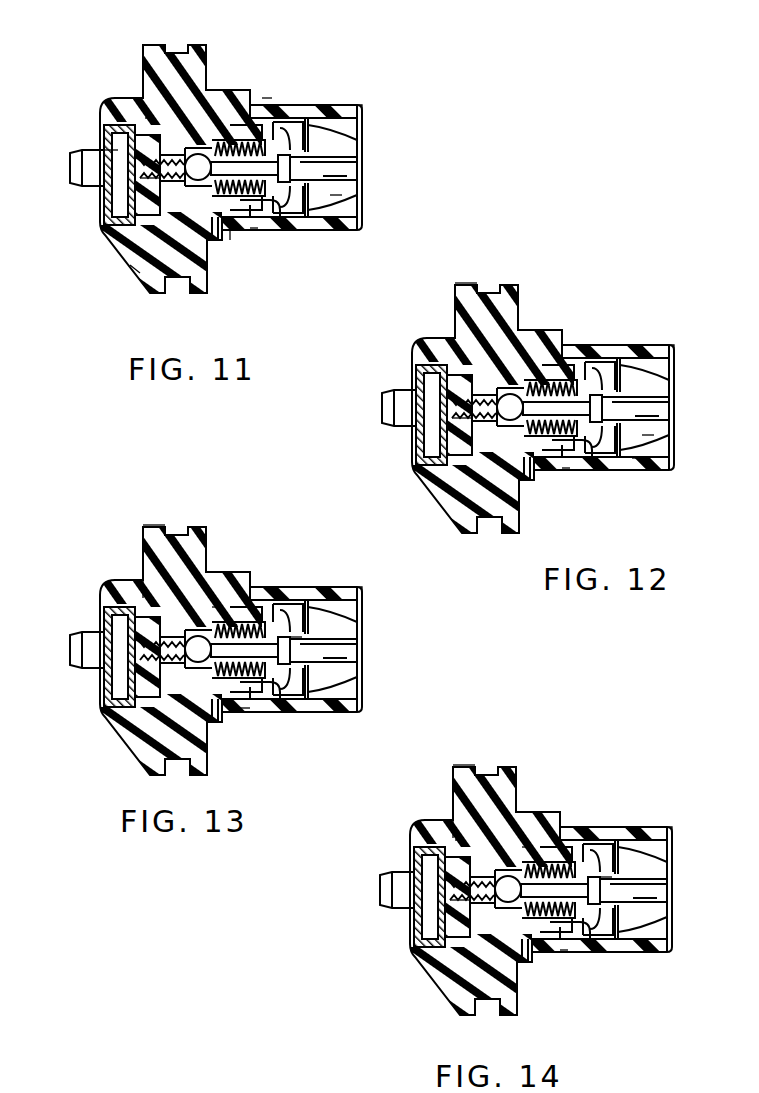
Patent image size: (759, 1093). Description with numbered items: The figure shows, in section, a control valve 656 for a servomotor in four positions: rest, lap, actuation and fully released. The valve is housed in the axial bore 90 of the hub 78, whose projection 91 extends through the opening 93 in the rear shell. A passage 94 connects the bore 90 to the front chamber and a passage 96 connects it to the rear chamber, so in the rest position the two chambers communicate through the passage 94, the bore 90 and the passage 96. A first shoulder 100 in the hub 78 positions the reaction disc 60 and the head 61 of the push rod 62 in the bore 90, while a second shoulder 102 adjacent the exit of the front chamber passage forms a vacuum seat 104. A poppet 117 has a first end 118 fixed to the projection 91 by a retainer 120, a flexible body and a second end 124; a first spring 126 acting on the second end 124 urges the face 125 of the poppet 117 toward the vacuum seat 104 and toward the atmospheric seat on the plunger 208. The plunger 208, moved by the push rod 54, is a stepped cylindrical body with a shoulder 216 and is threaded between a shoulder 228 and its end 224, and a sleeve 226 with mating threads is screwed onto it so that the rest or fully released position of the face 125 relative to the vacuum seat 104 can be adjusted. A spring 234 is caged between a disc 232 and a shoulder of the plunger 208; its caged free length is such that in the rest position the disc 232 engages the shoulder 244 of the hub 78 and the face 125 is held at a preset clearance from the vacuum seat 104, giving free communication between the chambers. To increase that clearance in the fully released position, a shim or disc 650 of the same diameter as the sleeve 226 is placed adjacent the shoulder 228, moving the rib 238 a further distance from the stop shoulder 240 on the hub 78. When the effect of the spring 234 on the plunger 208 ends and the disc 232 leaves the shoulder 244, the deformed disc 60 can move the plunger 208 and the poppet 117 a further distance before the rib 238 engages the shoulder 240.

In FIG. 11, the push rod 54 is at (348, 171).
In FIG. 12, the push rod 54 is at (657, 399).
In FIG. 13, the push rod 54 is at (350, 657).
In FIG. 14, the push rod 54 is at (655, 895).
In FIG. 11, the reaction disc 60 is at (118, 150).
In FIG. 12, the reaction disc 60 is at (427, 387).
In FIG. 13, the reaction disc 60 is at (117, 665).
In FIG. 14, the reaction disc 60 is at (430, 906).
In FIG. 11, the head 61 is at (107, 130).
In FIG. 12, the head 61 is at (412, 446).
In FIG. 13, the head 61 is at (103, 622).
In FIG. 14, the head 61 is at (420, 858).
In FIG. 11, the push rod 62 is at (84, 165).
In FIG. 12, the push rod 62 is at (393, 404).
In FIG. 13, the push rod 62 is at (78, 650).
In FIG. 14, the push rod 62 is at (386, 896).
In FIG. 11, the hub 78 is at (150, 297).
In FIG. 12, the hub 78 is at (458, 296).
In FIG. 13, the hub 78 is at (150, 530).
In FIG. 14, the hub 78 is at (462, 768).
In FIG. 11, the axial bore 90 is at (360, 133).
In FIG. 12, the axial bore 90 is at (675, 368).
In FIG. 13, the axial bore 90 is at (360, 617).
In FIG. 14, the axial bore 90 is at (668, 850).
In FIG. 11, the projection 91 is at (328, 112).
In FIG. 12, the projection 91 is at (667, 465).
In FIG. 13, the projection 91 is at (324, 594).
In FIG. 14, the projection 91 is at (633, 836).
In FIG. 11, the opening 93 is at (354, 110).
In FIG. 12, the opening 93 is at (630, 353).
In FIG. 13, the opening 93 is at (352, 594).
In FIG. 14, the opening 93 is at (652, 835).
In FIG. 11, the passage 94 is at (153, 80).
In FIG. 12, the passage 94 is at (465, 323).
In FIG. 13, the passage 94 is at (153, 562).
In FIG. 14, the passage 94 is at (465, 797).
In FIG. 11, the passage 96 is at (220, 238).
In FIG. 12, the passage 96 is at (530, 478).
In FIG. 13, the passage 96 is at (218, 720).
In FIG. 14, the passage 96 is at (524, 955).
In FIG. 11, the first shoulder 100 is at (120, 100).
In FIG. 11, the second shoulder 102 is at (236, 240).
In FIG. 11, the vacuum seat 104 is at (245, 135).
In FIG. 12, the vacuum seat 104 is at (547, 362).
In FIG. 14, the vacuum seat 104 is at (540, 847).
In FIG. 11, the poppet 117 is at (266, 124).
In FIG. 12, the poppet 117 is at (572, 360).
In FIG. 13, the poppet 117 is at (256, 704).
In FIG. 14, the poppet 117 is at (563, 926).
In FIG. 11, the first end 118 is at (307, 105).
In FIG. 11, the retainer 120 is at (312, 126).
In FIG. 11, the second end 124 is at (268, 100).
In FIG. 11, the face 125 is at (252, 238).
In FIG. 12, the face 125 is at (562, 472).
In FIG. 14, the face 125 is at (549, 942).
In FIG. 11, the first spring 126 is at (340, 197).
In FIG. 12, the first spring 126 is at (612, 377).
In FIG. 13, the first spring 126 is at (292, 634).
In FIG. 14, the first spring 126 is at (598, 875).
In FIG. 11, the plunger 208 is at (238, 128).
In FIG. 12, the plunger 208 is at (493, 350).
In FIG. 13, the plunger 208 is at (208, 605).
In FIG. 14, the plunger 208 is at (518, 815).
In FIG. 11, the shoulder 216 is at (176, 56).
In FIG. 11, the end 224 is at (126, 186).
In FIG. 12, the end 224 is at (430, 452).
In FIG. 14, the end 224 is at (432, 920).
In FIG. 11, the sleeve 226 is at (127, 245).
In FIG. 12, the sleeve 226 is at (487, 517).
In FIG. 13, the sleeve 226 is at (127, 720).
In FIG. 14, the sleeve 226 is at (427, 961).
In FIG. 11, the shoulder 228 is at (198, 294).
In FIG. 11, the disc 232 is at (170, 53).
In FIG. 13, the disc 232 is at (140, 600).
In FIG. 14, the disc 232 is at (452, 833).
In FIG. 11, the spring 234 is at (207, 284).
In FIG. 12, the spring 234 is at (520, 457).
In FIG. 13, the spring 234 is at (225, 610).
In FIG. 14, the spring 234 is at (515, 830).
In FIG. 11, the rib 238 is at (118, 155).
In FIG. 11, the shoulder 240 is at (137, 270).
In FIG. 11, the shoulder 244 is at (150, 120).
In FIG. 14, the shoulder 244 is at (432, 840).
In FIG. 11, the shim or disc 650 is at (172, 282).
In FIG. 11, the control valve 656 is at (258, 226).
In FIG. 12, the control valve 656 is at (588, 469).
In FIG. 13, the control valve 656 is at (246, 712).